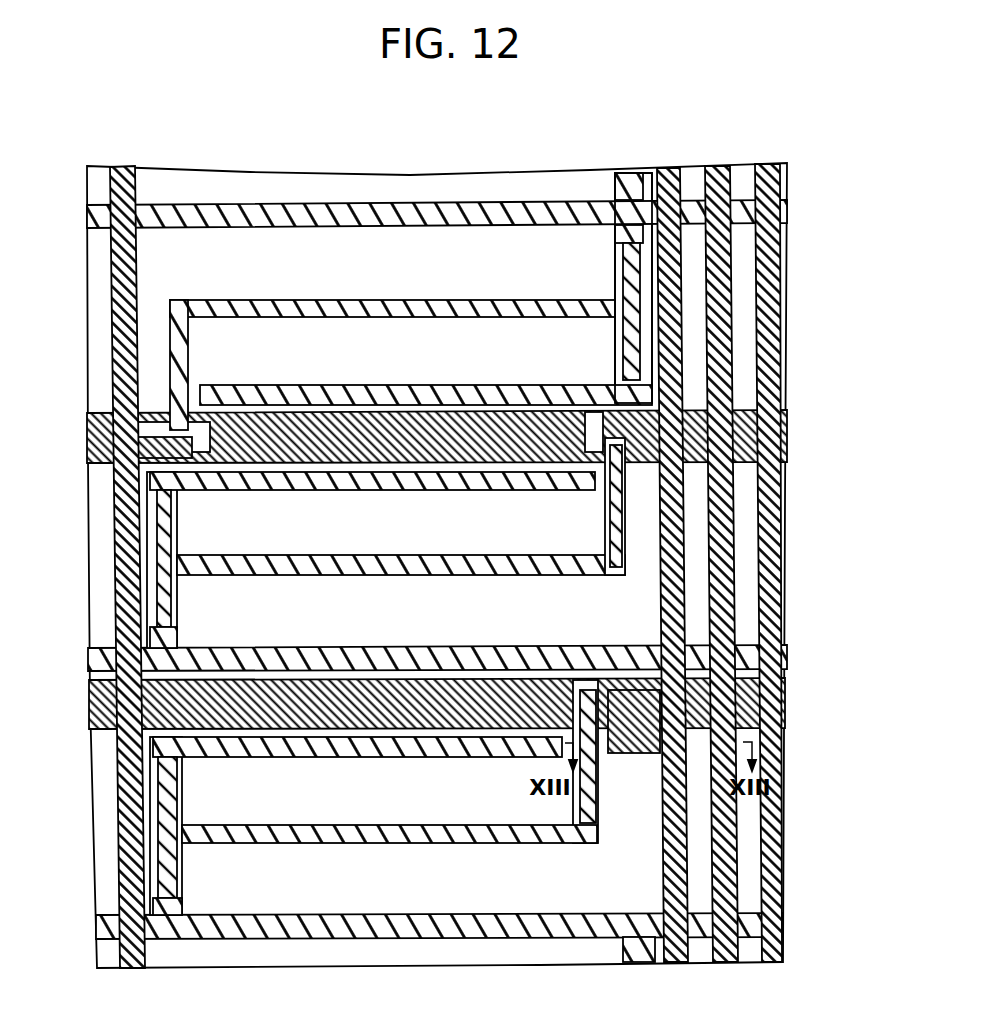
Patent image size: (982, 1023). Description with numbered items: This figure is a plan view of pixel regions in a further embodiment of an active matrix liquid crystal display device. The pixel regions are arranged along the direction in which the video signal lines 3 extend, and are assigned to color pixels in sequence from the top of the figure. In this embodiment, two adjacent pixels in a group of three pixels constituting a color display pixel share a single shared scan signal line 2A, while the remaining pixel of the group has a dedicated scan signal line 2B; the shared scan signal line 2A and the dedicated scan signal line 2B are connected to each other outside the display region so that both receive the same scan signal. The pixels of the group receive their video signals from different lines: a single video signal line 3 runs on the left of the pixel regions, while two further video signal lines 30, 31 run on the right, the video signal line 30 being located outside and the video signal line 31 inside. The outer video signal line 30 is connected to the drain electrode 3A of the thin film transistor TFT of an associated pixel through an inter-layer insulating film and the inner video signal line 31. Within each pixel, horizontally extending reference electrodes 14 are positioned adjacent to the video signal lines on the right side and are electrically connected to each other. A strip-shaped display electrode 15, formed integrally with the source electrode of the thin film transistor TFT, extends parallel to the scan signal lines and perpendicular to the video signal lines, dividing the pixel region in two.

The reference electrode 14 is at (498, 205).
The video signal line 3 is at (110, 301).
The video signal line 31 is at (683, 317).
The video signal line 30 is at (733, 361).
The shared scan signal line 2A is at (359, 457).
The dedicated scan signal line 2B is at (363, 720).
The thin film transistor TFT is at (721, 727).
The drain electrode 3A is at (618, 708).
The display electrode 15 is at (590, 774).